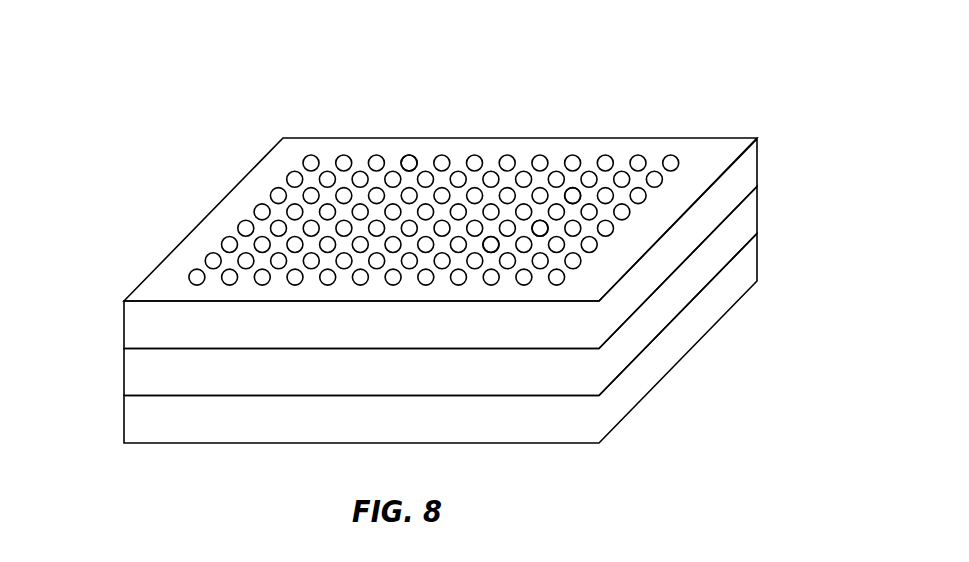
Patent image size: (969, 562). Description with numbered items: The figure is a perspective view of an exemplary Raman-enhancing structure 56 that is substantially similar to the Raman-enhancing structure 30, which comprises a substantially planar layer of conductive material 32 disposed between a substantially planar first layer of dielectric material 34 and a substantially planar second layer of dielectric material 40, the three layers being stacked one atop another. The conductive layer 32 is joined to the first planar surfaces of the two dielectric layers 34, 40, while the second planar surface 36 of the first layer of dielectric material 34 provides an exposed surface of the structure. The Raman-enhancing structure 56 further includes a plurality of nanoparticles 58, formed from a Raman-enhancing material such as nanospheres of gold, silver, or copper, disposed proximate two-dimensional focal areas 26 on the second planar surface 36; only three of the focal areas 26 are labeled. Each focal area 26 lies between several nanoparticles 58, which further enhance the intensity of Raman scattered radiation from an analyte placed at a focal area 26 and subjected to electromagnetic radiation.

The Raman-enhancing structure 56 is at (763, 93).
The nanoparticles 58 is at (409, 160).
The two-dimensional focal areas 26 is at (498, 250).
The second planar surface 36 is at (155, 288).
The first layer of dielectric material 34 is at (142, 327).
The layer of conductive material 32 is at (140, 371).
The second layer of dielectric material 40 is at (138, 420).
The Raman-enhancing structure 30 is at (58, 267).